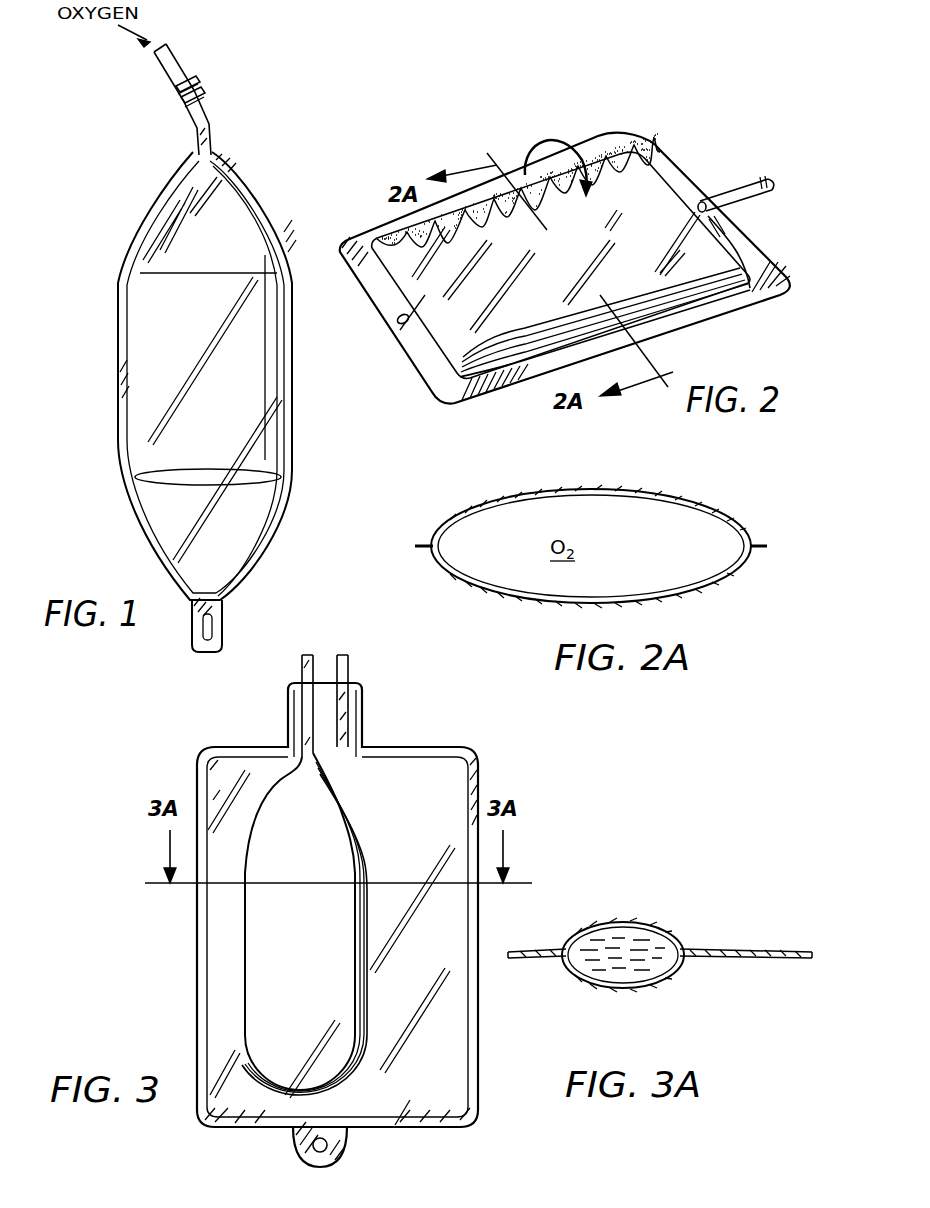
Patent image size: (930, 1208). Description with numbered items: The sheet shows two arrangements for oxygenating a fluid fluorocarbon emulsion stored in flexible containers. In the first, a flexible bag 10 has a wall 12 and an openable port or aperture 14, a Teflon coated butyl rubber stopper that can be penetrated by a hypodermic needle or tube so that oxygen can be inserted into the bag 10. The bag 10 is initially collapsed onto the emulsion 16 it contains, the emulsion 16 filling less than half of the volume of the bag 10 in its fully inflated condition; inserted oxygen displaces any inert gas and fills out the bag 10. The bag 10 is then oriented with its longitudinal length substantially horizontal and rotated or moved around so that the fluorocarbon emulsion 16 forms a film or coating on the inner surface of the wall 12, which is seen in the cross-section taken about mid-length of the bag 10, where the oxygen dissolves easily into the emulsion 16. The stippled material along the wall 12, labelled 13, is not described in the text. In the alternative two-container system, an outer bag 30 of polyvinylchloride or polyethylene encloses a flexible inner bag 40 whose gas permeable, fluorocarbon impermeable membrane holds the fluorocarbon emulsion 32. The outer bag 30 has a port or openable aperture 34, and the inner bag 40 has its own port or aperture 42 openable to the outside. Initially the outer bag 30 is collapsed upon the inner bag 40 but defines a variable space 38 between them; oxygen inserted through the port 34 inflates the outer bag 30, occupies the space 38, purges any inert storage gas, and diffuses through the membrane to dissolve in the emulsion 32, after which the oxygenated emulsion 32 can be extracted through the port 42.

In FIG. 1, the flexible bag 10 is at (116, 236).
In FIG. 2, the flexible bag 10 is at (491, 137).
In FIG. 2A, the flexible bag 10 is at (710, 591).
In FIG. 1, the wall 12 is at (130, 362).
In FIG. 2, the wall 12 is at (620, 152).
In FIG. 2A, the wall 12 is at (515, 598).
In FIG. 2, the oxygen-generating chemical 13 is at (566, 140).
In FIG. 1, the openable port or aperture 14 is at (175, 92).
In FIG. 2, the openable port or aperture 14 is at (760, 184).
In FIG. 1, the emulsion 16 is at (224, 544).
In FIG. 2A, the emulsion 16 is at (665, 588).
In FIG. 3, the outer bag 30 is at (490, 793).
In FIG. 3, the fluorocarbon emulsion 32 is at (319, 926).
In FIG. 3A, the fluorocarbon emulsion 32 is at (623, 960).
In FIG. 3, the port or openable aperture 34 is at (350, 674).
In FIG. 3, the variable space 38 is at (429, 963).
In FIG. 3, the flexible inner bag 40 is at (368, 1048).
In FIG. 3, the port or aperture 42 is at (300, 670).